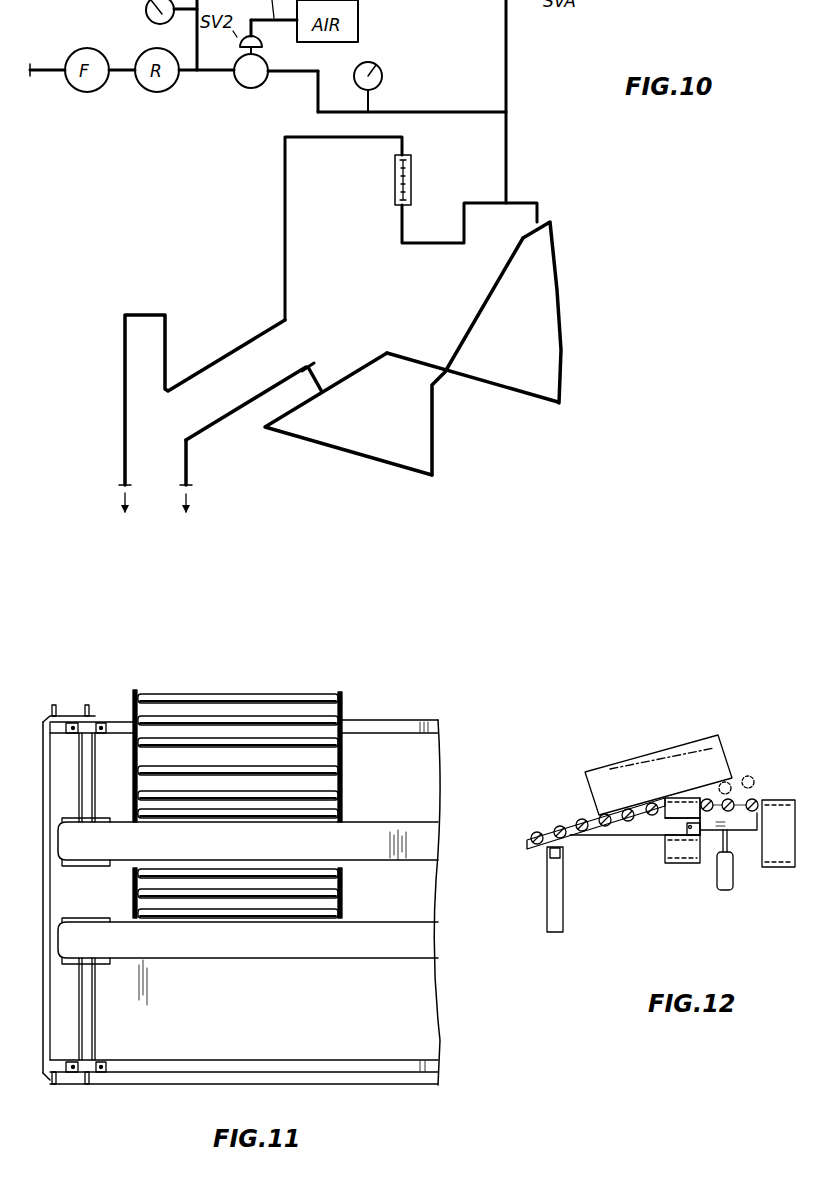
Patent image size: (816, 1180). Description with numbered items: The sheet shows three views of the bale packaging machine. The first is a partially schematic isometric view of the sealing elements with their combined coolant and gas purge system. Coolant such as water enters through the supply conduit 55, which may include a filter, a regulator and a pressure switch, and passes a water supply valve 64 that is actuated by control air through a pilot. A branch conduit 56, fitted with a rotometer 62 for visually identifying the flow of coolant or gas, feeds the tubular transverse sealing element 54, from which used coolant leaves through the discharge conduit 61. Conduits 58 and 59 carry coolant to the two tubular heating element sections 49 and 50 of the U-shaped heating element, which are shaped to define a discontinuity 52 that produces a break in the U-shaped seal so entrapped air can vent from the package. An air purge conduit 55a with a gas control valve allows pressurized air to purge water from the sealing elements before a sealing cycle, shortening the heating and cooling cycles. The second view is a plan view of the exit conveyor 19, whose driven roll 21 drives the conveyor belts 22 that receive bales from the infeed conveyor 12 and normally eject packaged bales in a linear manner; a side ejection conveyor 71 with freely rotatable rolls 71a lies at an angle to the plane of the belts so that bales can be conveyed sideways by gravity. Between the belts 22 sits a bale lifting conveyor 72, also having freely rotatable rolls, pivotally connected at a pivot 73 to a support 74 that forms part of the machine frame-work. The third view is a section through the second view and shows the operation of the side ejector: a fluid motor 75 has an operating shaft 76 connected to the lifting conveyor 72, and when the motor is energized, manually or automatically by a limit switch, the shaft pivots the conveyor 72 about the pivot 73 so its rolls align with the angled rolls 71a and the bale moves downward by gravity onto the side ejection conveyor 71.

In FIG. 11, the infeed conveyor 12 is at (235, 677).
In FIG. 11, the exit conveyor 19 is at (362, 819).
In FIG. 11, the driven roll 21 is at (70, 821).
In FIG. 11, the conveyor belts 22 is at (440, 945).
In FIG. 12, the conveyor belts 22 is at (680, 864).
In FIG. 10, the heating element section 49 is at (345, 455).
In FIG. 10, the heating element section 50 is at (478, 375).
In FIG. 10, the discontinuity 52 is at (320, 398).
In FIG. 10, the transverse sealing element 54 is at (237, 350).
In FIG. 10, the supply conduit 55 is at (508, 150).
In FIG. 10, the air purge conduit 55a is at (508, 50).
In FIG. 10, the branch conduit 56 is at (395, 237).
In FIG. 10, the conduit 58 is at (457, 321).
In FIG. 10, the conduit 59 is at (560, 293).
In FIG. 10, the discharge conduit 61 is at (122, 429).
In FIG. 10, the rotometer 62 is at (395, 186).
In FIG. 10, the water supply valve 64 is at (245, 88).
In FIG. 11, the side ejection conveyor 71 is at (264, 743).
In FIG. 12, the side ejection conveyor 71 is at (573, 814).
In FIG. 11, the freely rotatable rolls 71a is at (302, 720).
In FIG. 12, the freely rotatable rolls 71a is at (560, 826).
In FIG. 11, the bale lifting conveyor 72 is at (135, 893).
In FIG. 12, the bale lifting conveyor 72 is at (752, 803).
In FIG. 12, the pivot 73 is at (688, 829).
In FIG. 12, the support 74 is at (627, 833).
In FIG. 12, the fluid motor 75 is at (726, 884).
In FIG. 12, the operating shaft 76 is at (722, 845).